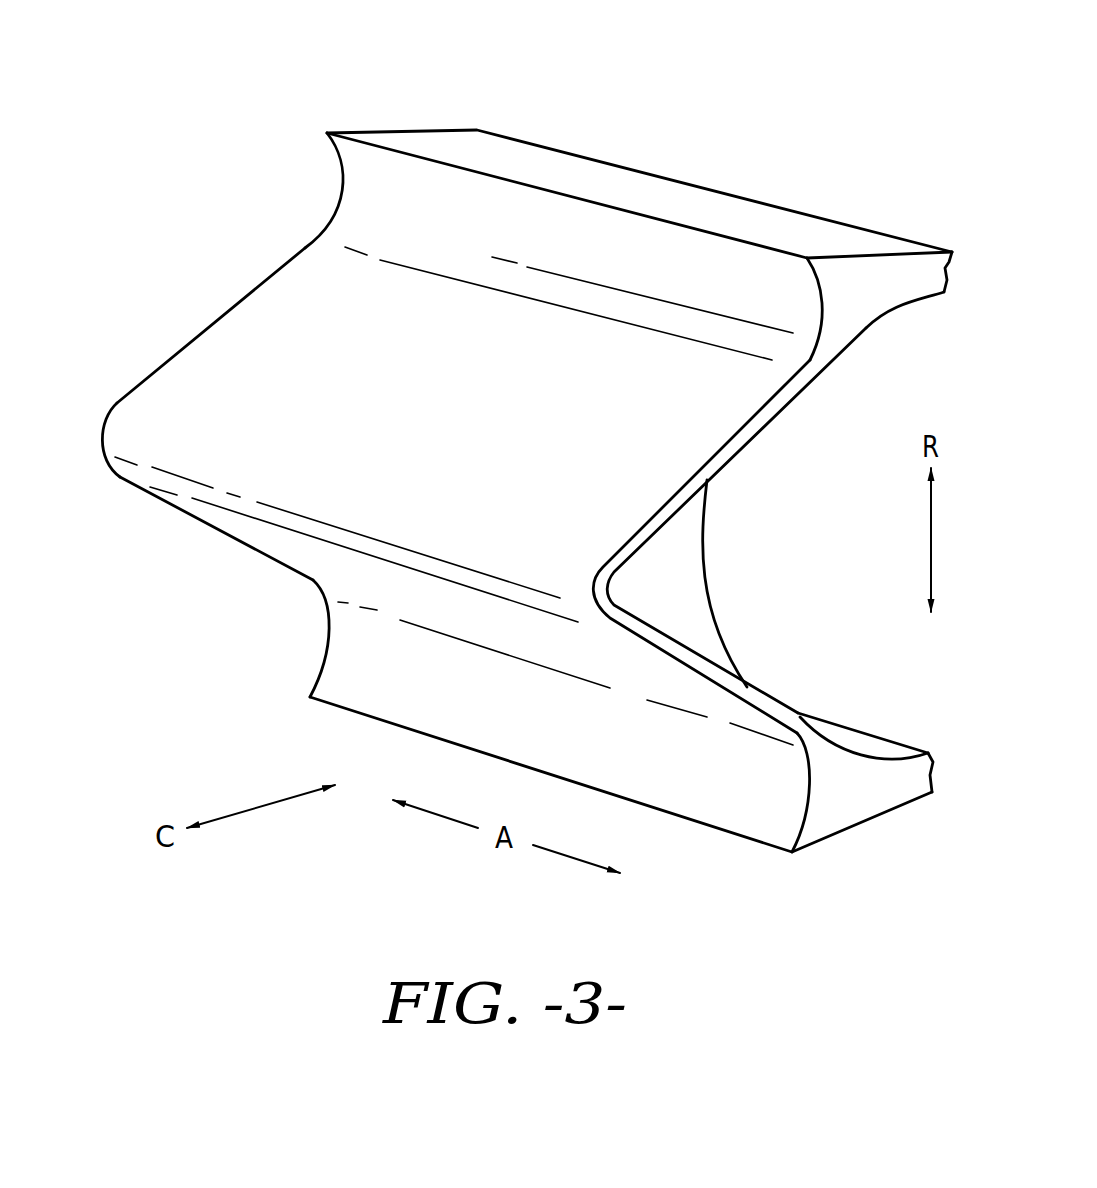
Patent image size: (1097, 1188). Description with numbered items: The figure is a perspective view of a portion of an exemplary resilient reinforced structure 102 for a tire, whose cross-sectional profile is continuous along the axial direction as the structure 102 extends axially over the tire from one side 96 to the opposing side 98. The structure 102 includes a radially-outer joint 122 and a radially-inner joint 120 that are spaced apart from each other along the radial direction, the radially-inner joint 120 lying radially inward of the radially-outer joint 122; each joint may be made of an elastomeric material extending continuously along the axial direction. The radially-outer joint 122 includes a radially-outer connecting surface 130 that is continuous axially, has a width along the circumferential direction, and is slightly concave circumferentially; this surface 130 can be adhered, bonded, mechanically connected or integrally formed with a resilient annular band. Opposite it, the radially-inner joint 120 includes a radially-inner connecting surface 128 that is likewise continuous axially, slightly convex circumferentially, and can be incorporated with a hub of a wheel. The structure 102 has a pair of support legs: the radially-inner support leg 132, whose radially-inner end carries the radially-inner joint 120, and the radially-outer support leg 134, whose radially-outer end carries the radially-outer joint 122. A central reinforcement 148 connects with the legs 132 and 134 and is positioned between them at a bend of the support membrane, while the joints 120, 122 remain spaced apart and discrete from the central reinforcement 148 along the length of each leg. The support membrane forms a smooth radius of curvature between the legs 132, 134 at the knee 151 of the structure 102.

The reinforced structure 102 is at (502, 469).
The side 96 is at (566, 228).
The opposing side 98 is at (525, 654).
The radially-outer connecting surface 130 is at (513, 166).
The radially-inner connecting surface 128 is at (838, 837).
The radially-outer joint 122 is at (885, 293).
The radially-inner joint 120 is at (855, 795).
The radially-outer support leg 134 is at (748, 420).
The radially-inner support leg 132 is at (786, 716).
The central reinforcement 148 is at (677, 588).
The knee 151 is at (98, 438).